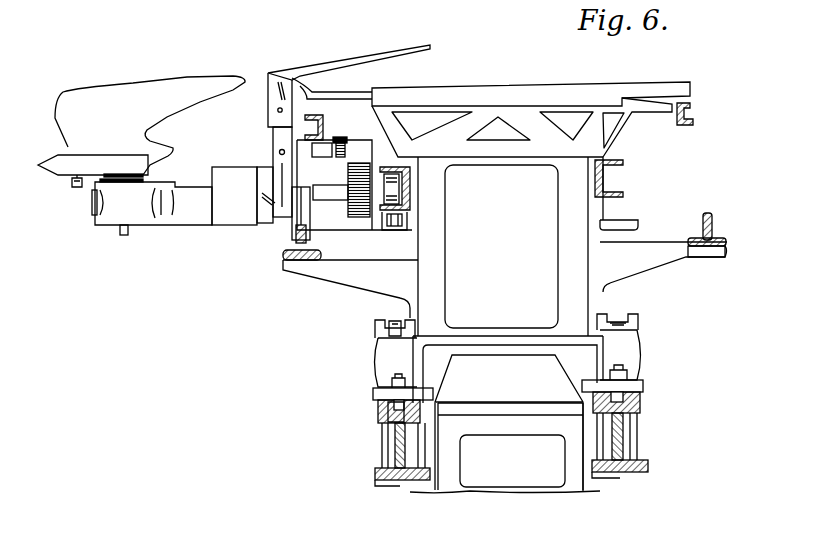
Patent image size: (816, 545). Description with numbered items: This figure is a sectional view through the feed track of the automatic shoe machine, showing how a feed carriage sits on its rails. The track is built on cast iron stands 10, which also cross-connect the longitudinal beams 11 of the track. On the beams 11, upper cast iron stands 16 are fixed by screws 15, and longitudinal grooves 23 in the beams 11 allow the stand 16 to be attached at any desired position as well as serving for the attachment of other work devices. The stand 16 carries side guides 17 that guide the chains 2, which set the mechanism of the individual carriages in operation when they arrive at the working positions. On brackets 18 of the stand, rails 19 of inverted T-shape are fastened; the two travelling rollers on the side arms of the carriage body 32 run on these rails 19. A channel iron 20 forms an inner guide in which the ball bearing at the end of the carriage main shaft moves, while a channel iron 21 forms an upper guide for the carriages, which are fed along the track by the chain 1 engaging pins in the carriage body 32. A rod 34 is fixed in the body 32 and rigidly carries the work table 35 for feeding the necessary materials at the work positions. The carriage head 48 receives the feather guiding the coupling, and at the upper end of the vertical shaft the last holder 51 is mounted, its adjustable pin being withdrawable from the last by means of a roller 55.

The chain 1 is at (347, 149).
The chain 2 is at (380, 216).
The cast iron stand 10 is at (576, 452).
The longitudinal beam 11 is at (380, 417).
The screw 15 is at (627, 373).
The cast iron stand 16 is at (437, 285).
The side guide 17 is at (640, 320).
The bracket 18 is at (670, 270).
The rail 19 is at (712, 225).
The channel iron 20 is at (623, 162).
The channel iron 21 is at (690, 122).
The longitudinal groove 23 is at (386, 424).
The carriage body 32 is at (273, 150).
The rod 34 is at (267, 131).
The work table 35 is at (308, 78).
The carriage head 48 is at (192, 215).
The last holder 51 is at (152, 162).
The roller 55 is at (73, 186).